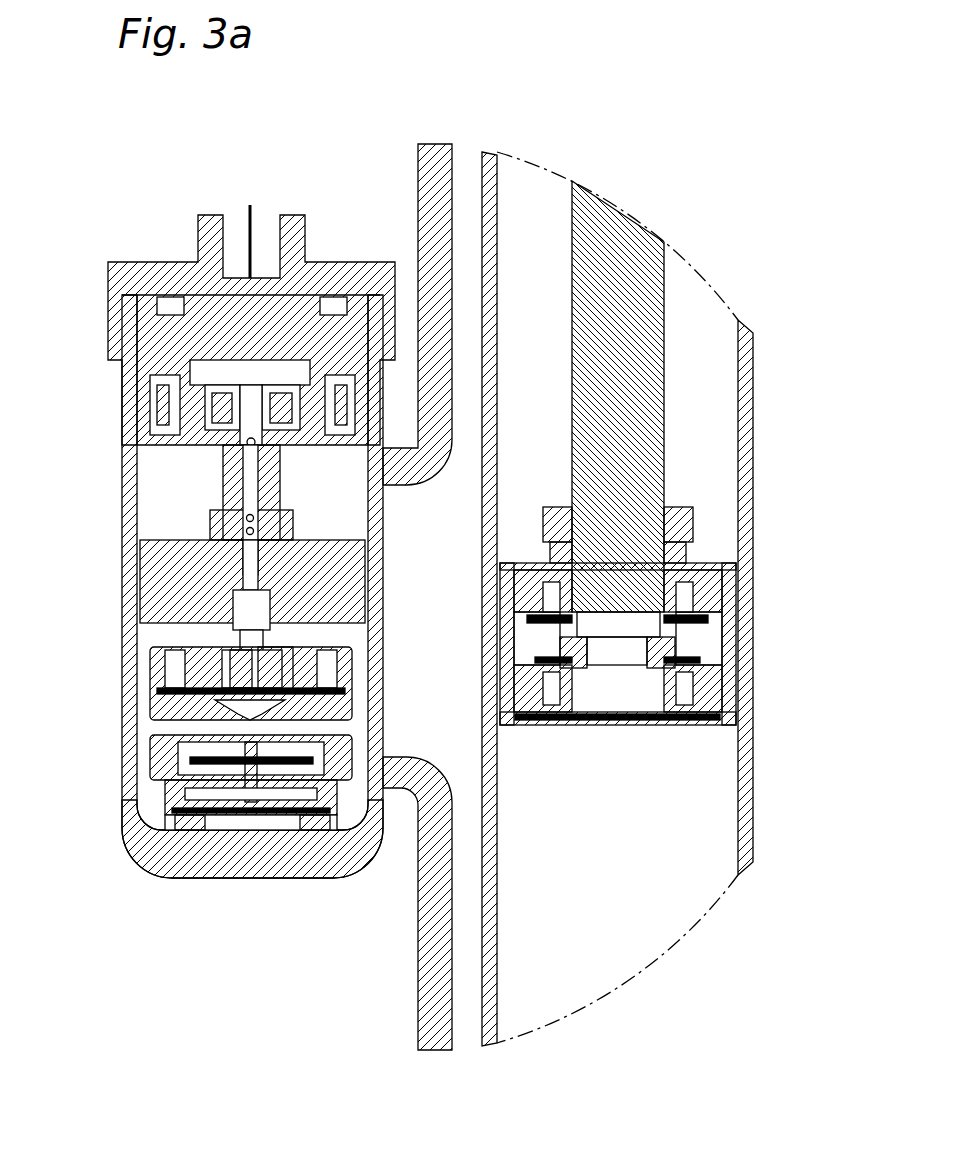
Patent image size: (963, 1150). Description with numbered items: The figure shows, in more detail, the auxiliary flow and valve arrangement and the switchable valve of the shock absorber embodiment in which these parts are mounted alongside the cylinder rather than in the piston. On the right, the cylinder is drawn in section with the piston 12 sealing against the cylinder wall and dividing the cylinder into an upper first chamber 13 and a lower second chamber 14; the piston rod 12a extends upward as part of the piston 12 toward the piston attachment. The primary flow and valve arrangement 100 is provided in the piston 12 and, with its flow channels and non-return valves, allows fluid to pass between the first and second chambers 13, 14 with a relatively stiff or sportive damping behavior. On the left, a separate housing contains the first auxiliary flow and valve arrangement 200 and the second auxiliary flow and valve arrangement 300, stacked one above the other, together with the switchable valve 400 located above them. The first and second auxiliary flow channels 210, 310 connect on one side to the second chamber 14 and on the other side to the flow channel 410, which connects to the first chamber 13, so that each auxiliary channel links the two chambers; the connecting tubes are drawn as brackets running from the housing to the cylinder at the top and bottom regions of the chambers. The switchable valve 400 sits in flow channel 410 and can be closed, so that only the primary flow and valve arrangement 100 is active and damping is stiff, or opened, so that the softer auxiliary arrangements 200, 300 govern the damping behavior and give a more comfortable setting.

The piston 12 is at (700, 547).
The piston rod 12a is at (637, 432).
The first chamber 13 is at (710, 363).
The second chamber 14 is at (632, 822).
The primary flow and valve arrangement 100 is at (765, 555).
The first auxiliary flow and valve arrangement 200 is at (110, 737).
The second auxiliary flow and valve arrangement 300 is at (110, 645).
The switchable valve 400 is at (222, 457).
The first auxiliary flow channel 210 is at (357, 596).
The second auxiliary flow channel 310 is at (357, 596).
The flow channel 410 is at (440, 205).